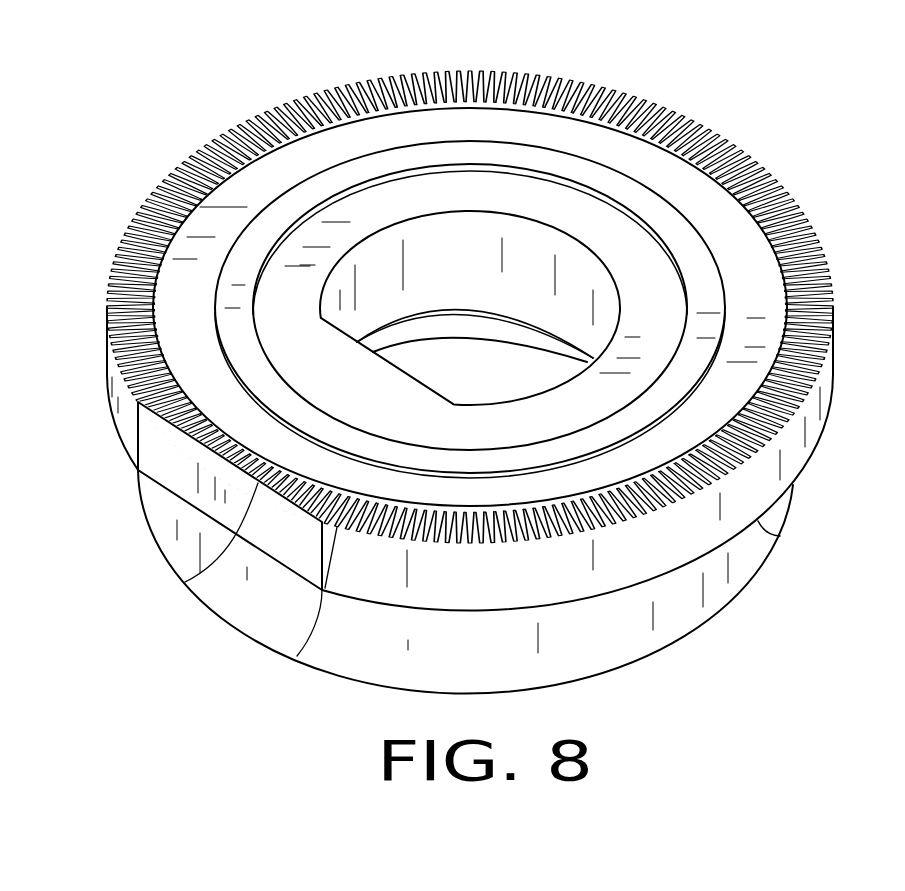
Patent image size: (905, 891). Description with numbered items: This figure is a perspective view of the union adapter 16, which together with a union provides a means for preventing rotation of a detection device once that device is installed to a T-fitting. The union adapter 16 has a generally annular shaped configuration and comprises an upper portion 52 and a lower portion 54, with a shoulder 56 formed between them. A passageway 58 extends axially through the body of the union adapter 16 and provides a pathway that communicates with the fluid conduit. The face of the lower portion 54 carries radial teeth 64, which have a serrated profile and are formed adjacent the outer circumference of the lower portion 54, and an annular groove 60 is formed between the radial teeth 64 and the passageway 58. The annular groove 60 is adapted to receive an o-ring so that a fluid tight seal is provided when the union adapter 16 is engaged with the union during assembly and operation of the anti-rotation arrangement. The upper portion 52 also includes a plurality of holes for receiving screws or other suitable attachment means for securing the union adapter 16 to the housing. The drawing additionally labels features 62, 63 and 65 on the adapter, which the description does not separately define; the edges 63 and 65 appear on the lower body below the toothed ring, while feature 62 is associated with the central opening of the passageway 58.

The union adapter 16 is at (246, 88).
The upper portion 52 is at (695, 598).
The lower portion 54 is at (810, 423).
The shoulder 56 is at (780, 536).
The passageway 58 is at (530, 373).
The annular groove 60 is at (610, 182).
The central D-shaped bore 62 is at (510, 213).
The left edge of hub flat 63 is at (190, 580).
The radial teeth 64 is at (753, 177).
The right edge of hub flat 65 is at (297, 656).